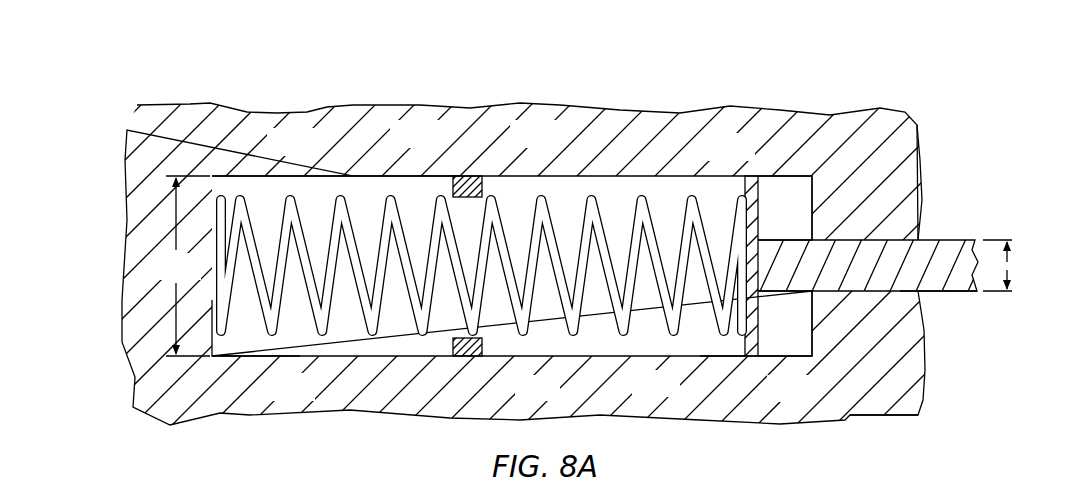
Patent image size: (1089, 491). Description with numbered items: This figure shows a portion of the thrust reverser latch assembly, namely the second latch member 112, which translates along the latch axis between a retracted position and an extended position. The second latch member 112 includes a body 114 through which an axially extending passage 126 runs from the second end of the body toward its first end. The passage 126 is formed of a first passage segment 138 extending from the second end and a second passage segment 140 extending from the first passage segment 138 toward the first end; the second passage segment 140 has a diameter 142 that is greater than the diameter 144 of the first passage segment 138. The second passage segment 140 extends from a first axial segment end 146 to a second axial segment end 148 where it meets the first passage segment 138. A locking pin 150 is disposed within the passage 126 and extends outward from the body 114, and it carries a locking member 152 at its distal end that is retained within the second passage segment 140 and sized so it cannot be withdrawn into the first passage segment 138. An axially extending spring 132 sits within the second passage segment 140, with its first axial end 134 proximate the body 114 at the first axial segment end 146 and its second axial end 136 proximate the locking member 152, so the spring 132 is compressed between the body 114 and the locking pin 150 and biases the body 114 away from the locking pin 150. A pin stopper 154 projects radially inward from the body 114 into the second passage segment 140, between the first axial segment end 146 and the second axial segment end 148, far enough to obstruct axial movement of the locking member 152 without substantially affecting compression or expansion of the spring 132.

The second latch member 112 is at (940, 89).
The body 114 is at (637, 140).
The axially extending passage 126 is at (849, 336).
The axially extending spring 132 is at (390, 205).
The first axial end 134 is at (226, 348).
The second axial end 136 is at (736, 340).
The first passage segment 138 is at (951, 300).
The second passage segment 140 is at (390, 368).
The diameter 142 is at (184, 266).
The diameter 144 is at (1019, 265).
The first axial segment end 146 is at (233, 187).
The second axial segment end 148 is at (810, 200).
The locking pin 150 is at (945, 255).
The locking member 152 is at (760, 315).
The pin stopper 154 is at (467, 182).